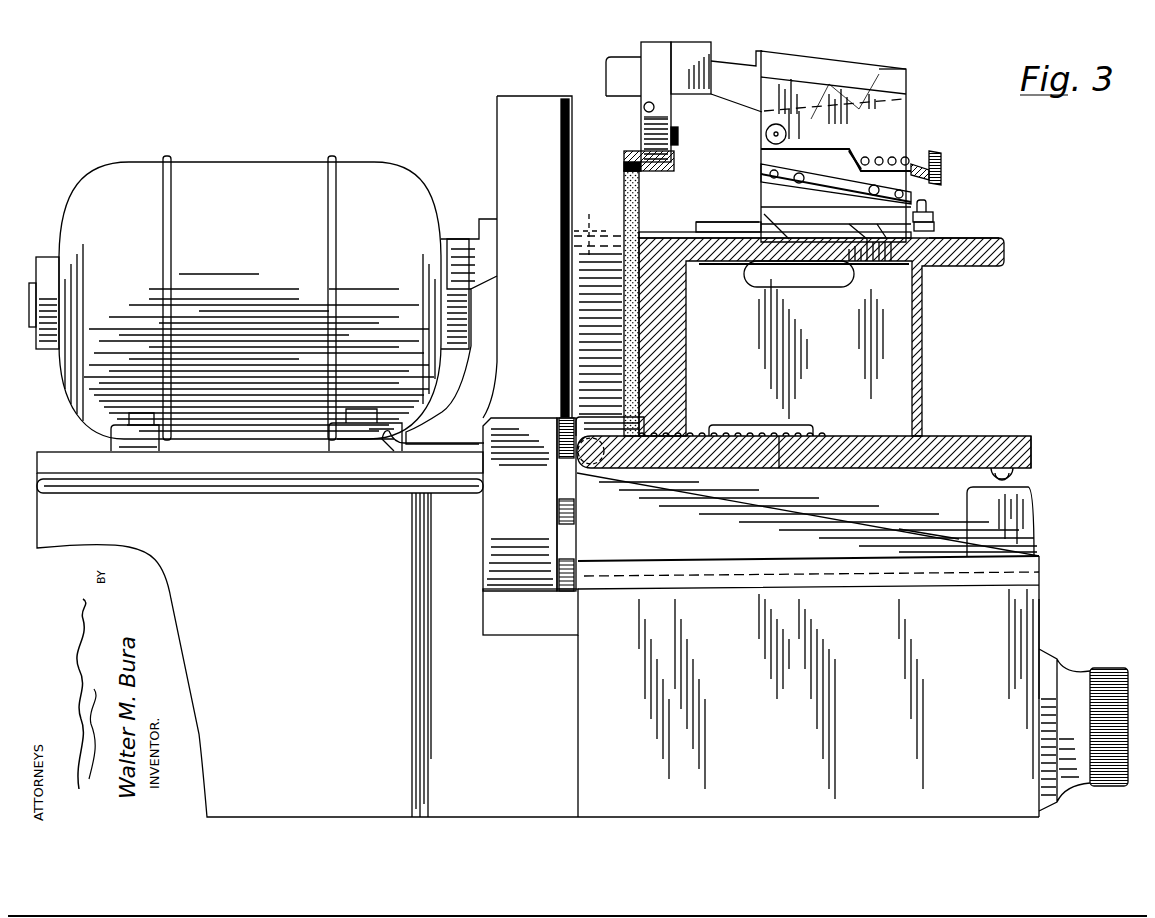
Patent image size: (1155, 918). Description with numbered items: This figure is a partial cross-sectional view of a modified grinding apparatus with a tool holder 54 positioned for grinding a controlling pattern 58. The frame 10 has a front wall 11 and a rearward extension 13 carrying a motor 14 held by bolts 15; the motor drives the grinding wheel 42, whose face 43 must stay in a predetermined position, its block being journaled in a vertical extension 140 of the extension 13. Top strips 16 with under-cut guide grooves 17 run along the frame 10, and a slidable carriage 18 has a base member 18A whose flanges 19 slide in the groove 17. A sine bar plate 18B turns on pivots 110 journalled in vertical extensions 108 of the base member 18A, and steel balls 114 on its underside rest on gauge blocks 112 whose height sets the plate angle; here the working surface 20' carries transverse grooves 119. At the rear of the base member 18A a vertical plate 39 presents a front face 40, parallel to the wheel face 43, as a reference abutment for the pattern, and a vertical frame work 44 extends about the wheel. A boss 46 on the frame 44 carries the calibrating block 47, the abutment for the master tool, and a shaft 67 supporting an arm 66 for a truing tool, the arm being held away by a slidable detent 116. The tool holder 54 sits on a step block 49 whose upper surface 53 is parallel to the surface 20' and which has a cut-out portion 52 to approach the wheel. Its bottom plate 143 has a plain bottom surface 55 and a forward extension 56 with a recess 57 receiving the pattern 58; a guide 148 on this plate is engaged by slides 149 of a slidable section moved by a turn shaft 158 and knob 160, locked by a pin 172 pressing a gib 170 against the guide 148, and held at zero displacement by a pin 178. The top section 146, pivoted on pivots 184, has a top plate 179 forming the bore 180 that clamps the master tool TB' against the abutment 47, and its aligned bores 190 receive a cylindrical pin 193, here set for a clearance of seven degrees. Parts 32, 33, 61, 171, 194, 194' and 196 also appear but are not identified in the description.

The base or frame 10 is at (960, 662).
The front wall 11 is at (1042, 619).
The rearward extension 13 is at (126, 528).
The motor 14 is at (249, 298).
The bolts 15 is at (145, 447).
The top strips 16 is at (1042, 558).
The under-cut guide grooves 17 is at (1042, 577).
The slidable carriage 18 is at (848, 506).
The base member 18A is at (910, 522).
The sine bar plate 18B is at (1030, 437).
The projecting flanges 19 is at (1042, 597).
The working surface 20' is at (804, 437).
The shaft 32 is at (1045, 650).
The knob 33 is at (1110, 669).
The vertical plate 39 is at (549, 510).
The front face 40 is at (621, 425).
The grinding wheel 42 is at (641, 197).
The face of the grinding wheel 43 is at (642, 182).
The vertical frame work 44 is at (538, 204).
The boss 46 is at (616, 96).
The calibrating block 47 is at (700, 56).
The step block 49 is at (932, 346).
The cut-out portion 52 is at (616, 243).
The upper surface 53 is at (947, 244).
The tool holder 54 is at (918, 101).
The bottom surface 55 is at (836, 262).
The forward extension 56 is at (718, 223).
The recess 57 is at (752, 227).
The controlling pattern 58 is at (680, 233).
The sloped member 61 is at (732, 88).
The arm 66 is at (660, 108).
The shaft 67 is at (680, 138).
The vertical extensions 108 is at (610, 472).
The pivots 110 is at (560, 447).
The gauge blocks 112 is at (1032, 510).
The steel balls 114 is at (1016, 478).
The slidable detent 116 is at (656, 120).
The transversely extending grooves 119 is at (782, 460).
The vertical extension 140 is at (487, 222).
The bottom plate 143 is at (866, 268).
The top section 146 is at (770, 112).
The guide 148 is at (913, 200).
The slides 149 is at (767, 200).
The turn shaft 158 is at (933, 165).
The knob 160 is at (942, 160).
The gib 170 is at (878, 250).
The knob 171 is at (928, 210).
The pin 172 is at (935, 220).
The pin 178 is at (936, 228).
The top plate 179 is at (907, 72).
The tool-receiving bore 180 is at (912, 104).
The pivots 184 is at (767, 136).
The aligned bores 190 is at (902, 160).
The cylindrical pin 193 is at (852, 170).
The plate 194 is at (741, 167).
The plate edge 194' is at (817, 158).
The stop 196 is at (796, 185).
The master tool TB' is at (833, 141).